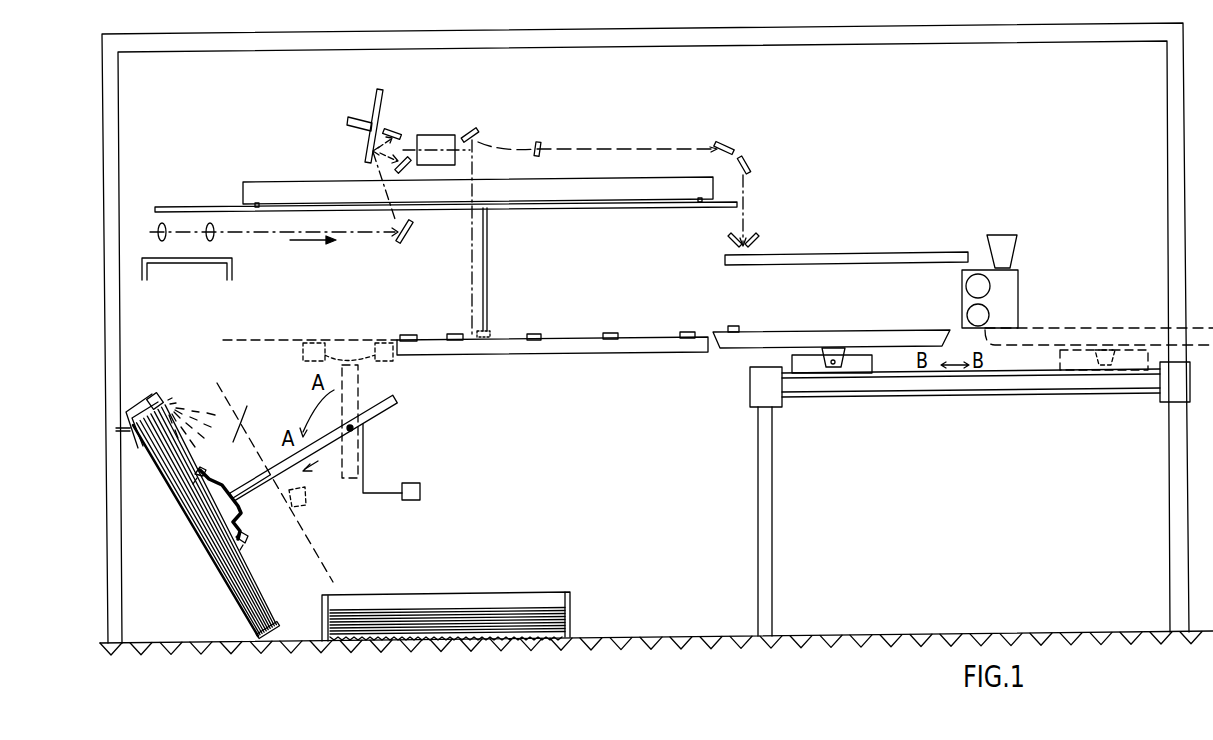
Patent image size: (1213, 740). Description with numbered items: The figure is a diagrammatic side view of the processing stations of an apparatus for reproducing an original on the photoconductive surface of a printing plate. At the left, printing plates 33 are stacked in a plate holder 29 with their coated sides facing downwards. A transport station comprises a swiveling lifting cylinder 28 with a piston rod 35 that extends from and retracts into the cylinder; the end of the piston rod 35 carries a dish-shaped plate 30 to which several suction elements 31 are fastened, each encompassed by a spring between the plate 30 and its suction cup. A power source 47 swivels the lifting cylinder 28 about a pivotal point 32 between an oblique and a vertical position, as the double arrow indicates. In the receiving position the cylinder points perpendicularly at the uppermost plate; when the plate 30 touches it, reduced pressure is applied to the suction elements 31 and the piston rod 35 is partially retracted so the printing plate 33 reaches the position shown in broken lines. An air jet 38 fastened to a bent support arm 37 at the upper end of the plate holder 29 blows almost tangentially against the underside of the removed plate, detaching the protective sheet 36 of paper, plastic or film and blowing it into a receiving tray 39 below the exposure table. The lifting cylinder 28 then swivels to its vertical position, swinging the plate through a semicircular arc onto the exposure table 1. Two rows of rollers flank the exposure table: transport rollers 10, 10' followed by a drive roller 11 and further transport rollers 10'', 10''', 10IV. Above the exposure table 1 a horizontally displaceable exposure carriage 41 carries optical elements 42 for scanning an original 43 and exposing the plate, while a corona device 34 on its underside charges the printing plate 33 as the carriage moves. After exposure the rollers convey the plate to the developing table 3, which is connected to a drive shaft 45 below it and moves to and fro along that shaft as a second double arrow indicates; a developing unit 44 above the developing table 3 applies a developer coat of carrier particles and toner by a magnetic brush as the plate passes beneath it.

The exposure table 1 is at (483, 352).
The developing table 3 is at (747, 344).
The transport roller 10 is at (404, 321).
The transport roller 10' is at (446, 319).
The transport roller 10'' is at (607, 313).
The transport roller 10''' is at (682, 312).
The transport roller 10IV is at (735, 325).
The drive roller 11 is at (535, 333).
The lifting cylinder 28 is at (383, 414).
The plate holder 29 is at (283, 618).
The dish-shaped plate 30 is at (242, 509).
The suction elements 31 is at (205, 470).
The pivotal point 32 is at (352, 426).
The printing plate 33 is at (325, 556).
The corona device 34 is at (487, 330).
The piston rod 35 is at (258, 483).
The sheet 36 is at (460, 610).
The bent support arm 37 is at (140, 397).
The air jet 38 is at (156, 400).
The receiving tray 39 is at (575, 607).
The exposure carriage 41 is at (584, 196).
The optical elements 42 is at (439, 135).
The original 43 is at (866, 253).
The developing unit 44 is at (1013, 284).
The drive shaft 45 is at (1012, 386).
The power source 47 is at (420, 483).